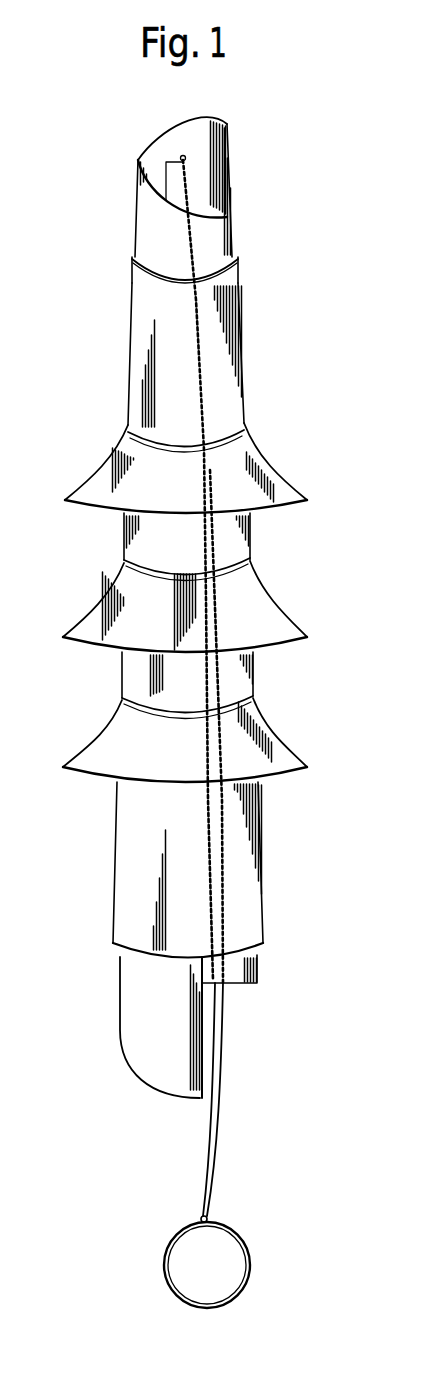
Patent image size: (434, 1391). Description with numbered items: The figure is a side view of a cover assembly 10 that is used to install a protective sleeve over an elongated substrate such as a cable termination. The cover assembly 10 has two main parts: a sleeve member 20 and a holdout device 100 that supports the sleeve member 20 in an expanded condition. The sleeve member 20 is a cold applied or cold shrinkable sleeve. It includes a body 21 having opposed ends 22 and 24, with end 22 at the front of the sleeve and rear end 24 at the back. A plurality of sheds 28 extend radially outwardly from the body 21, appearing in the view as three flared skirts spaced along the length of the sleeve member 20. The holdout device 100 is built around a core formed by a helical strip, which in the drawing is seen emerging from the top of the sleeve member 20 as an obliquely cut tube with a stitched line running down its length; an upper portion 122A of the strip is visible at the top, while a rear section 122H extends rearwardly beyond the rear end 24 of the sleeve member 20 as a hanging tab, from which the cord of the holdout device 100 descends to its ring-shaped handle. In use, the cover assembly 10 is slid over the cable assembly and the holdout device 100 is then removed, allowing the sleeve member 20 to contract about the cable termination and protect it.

The cover assembly 10 is at (196, 710).
The holdout device 100 is at (243, 547).
The strap upper end 122A is at (205, 193).
The rear section 122H is at (150, 1030).
The sleeve member 20 is at (196, 727).
The body 21 is at (148, 330).
The end 22 is at (153, 267).
The rear end 24 is at (147, 957).
The sheds 28 is at (115, 477).